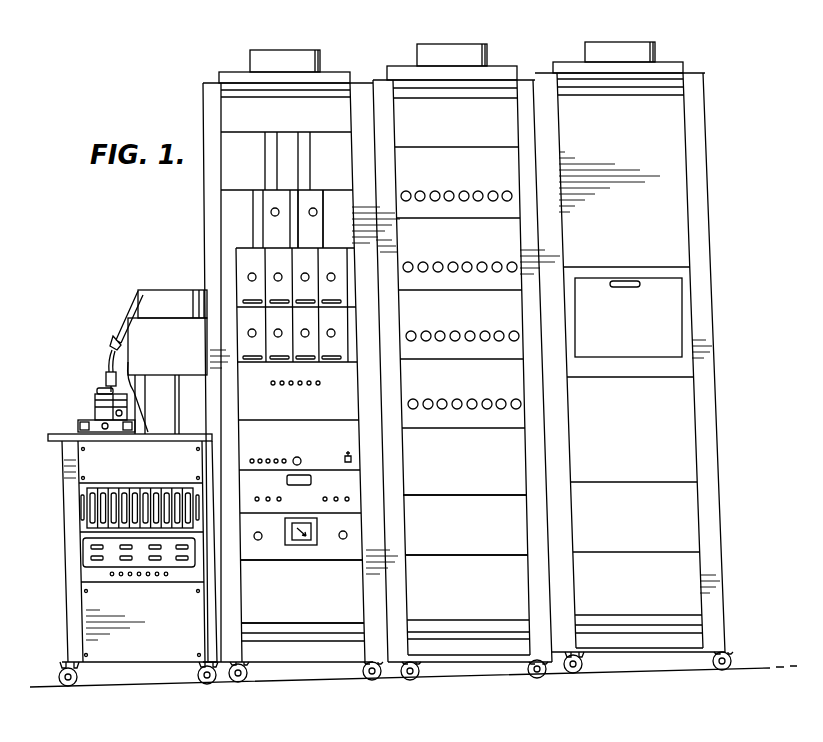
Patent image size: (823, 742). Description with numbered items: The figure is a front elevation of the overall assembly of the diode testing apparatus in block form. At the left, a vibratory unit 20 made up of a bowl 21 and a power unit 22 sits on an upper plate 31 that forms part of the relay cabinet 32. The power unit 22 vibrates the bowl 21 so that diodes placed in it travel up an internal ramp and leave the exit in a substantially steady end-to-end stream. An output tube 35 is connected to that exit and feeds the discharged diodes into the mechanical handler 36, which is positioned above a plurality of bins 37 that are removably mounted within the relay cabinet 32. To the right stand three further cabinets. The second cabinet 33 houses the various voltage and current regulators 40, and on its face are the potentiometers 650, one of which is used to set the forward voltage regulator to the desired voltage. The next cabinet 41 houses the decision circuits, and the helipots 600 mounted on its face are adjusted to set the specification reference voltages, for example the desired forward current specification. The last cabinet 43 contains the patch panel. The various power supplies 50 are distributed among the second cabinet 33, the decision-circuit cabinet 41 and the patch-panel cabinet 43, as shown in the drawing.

The vibratory unit 20 is at (171, 278).
The bowl 21 is at (184, 298).
The power unit 22 is at (145, 328).
The upper plate 31 is at (48, 437).
The relay cabinet 32 is at (54, 639).
The second cabinet 33 is at (277, 689).
The output tube 35 is at (108, 358).
The mechanical handler 36 is at (78, 396).
The bins 37 is at (101, 513).
The voltage and current regulators 40 is at (272, 207).
The cabinet 41 is at (519, 56).
The cabinet 43 is at (689, 55).
The power supplies 50 is at (328, 607).
The helipots 600 is at (464, 193).
The potentiometers 650 is at (313, 208).